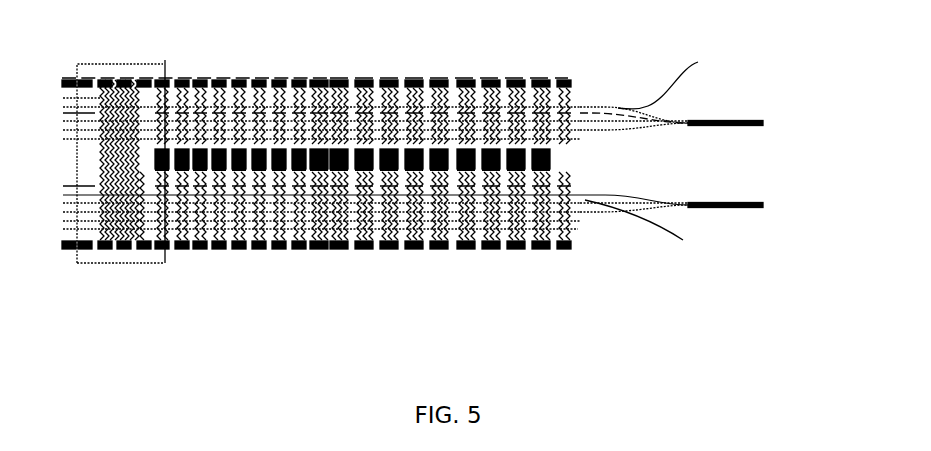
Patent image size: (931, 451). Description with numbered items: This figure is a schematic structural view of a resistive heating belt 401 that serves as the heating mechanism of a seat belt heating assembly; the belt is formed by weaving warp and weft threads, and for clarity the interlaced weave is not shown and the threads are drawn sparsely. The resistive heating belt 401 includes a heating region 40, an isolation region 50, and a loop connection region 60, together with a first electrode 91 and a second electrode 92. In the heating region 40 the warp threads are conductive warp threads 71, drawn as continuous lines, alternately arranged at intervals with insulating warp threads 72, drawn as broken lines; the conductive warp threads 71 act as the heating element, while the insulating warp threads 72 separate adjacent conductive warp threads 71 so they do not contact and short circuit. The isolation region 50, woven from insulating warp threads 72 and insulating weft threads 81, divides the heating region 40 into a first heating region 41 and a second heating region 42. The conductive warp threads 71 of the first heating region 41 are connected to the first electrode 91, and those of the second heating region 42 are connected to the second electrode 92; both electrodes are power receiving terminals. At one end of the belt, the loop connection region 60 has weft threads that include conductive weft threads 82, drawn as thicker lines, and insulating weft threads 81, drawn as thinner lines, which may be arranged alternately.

The heating region 40 is at (654, 154).
The first heating region 41 is at (323, 110).
The second heating region 42 is at (323, 195).
The isolation region 50 is at (510, 78).
The loop connection region 60 is at (107, 263).
The conductive warp threads 71 is at (578, 223).
The insulating warp threads 72 is at (568, 96).
The insulating weft threads 81 is at (103, 81).
The conductive weft threads 82 is at (138, 218).
The first electrode 91 is at (712, 120).
The second electrode 92 is at (752, 203).
The resistive heating belt 401 is at (510, 318).